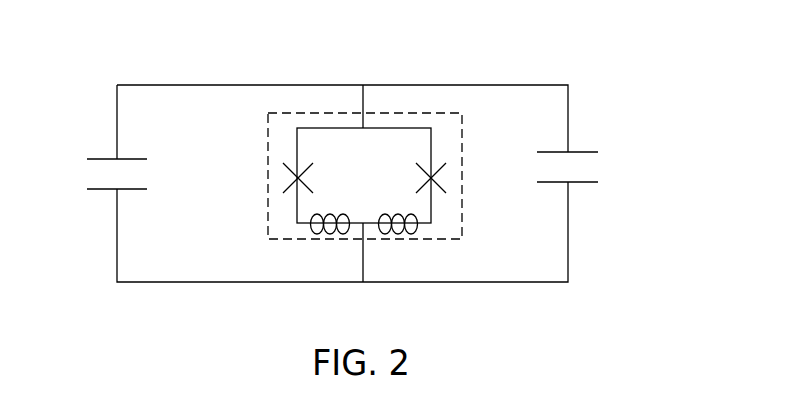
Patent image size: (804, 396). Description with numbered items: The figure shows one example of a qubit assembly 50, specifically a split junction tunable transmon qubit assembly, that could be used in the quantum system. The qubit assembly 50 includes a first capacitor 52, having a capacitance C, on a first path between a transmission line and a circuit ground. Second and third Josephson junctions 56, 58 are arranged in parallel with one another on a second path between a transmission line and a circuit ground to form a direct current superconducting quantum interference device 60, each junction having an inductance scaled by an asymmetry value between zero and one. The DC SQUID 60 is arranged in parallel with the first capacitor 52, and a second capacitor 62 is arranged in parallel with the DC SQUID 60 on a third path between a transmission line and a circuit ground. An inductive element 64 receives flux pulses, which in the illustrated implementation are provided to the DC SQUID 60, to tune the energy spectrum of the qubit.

The qubit assembly 50 is at (568, 37).
The first capacitor 52 is at (133, 159).
The second Josephson junction 56 is at (287, 186).
The third Josephson junction 58 is at (443, 183).
The direct current superconducting quantum interference device 60 is at (402, 113).
The second capacitor 62 is at (580, 152).
The inductive element 64 is at (327, 234).